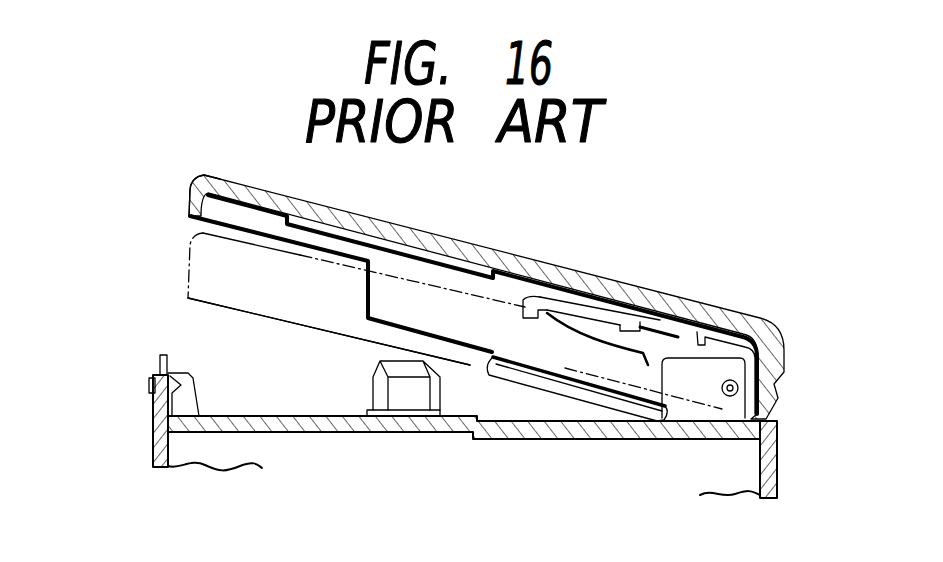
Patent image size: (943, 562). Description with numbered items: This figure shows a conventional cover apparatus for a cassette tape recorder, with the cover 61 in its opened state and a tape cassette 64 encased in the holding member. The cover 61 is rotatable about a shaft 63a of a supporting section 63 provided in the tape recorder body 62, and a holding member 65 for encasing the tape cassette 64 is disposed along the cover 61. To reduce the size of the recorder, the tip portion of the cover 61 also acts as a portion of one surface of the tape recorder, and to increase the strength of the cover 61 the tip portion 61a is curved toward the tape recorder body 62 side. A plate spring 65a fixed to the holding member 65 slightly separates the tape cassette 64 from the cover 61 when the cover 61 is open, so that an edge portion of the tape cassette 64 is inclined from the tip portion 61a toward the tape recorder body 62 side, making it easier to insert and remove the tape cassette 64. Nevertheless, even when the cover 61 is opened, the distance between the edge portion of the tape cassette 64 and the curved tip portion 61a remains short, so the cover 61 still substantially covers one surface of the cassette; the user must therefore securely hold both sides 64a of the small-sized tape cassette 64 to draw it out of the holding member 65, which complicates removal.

The cover 61 is at (503, 250).
The tip portion 61a is at (192, 183).
The tape recorder body 62 is at (152, 445).
The supporting section 63 is at (690, 413).
The shaft 63a is at (729, 400).
The tape cassette 64 is at (186, 283).
The sides 64a is at (278, 293).
The holding member 65 is at (582, 308).
The plate spring 65a is at (655, 322).